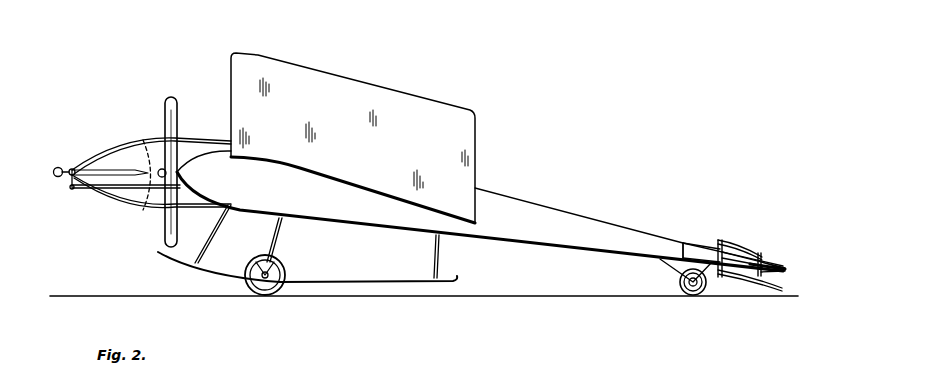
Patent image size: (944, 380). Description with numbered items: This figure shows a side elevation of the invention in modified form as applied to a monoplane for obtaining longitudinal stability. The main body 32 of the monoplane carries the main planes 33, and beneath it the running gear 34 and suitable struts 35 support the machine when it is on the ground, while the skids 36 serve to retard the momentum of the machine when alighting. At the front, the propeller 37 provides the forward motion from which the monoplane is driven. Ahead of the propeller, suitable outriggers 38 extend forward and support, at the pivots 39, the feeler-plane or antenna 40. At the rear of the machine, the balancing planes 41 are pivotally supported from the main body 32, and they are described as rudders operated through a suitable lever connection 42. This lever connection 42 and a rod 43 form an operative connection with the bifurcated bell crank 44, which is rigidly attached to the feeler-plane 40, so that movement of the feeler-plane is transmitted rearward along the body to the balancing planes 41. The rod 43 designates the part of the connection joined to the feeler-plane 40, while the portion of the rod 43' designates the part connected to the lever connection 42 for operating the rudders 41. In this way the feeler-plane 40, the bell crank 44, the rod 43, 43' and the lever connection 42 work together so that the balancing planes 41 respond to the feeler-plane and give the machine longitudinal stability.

The main body 32 is at (480, 211).
The main planes 33 is at (422, 110).
The running gear 34 is at (286, 272).
The struts 35 is at (217, 233).
The skids 36 is at (307, 267).
The propeller 37 is at (178, 107).
The outriggers 38 is at (115, 150).
The pivots 39 is at (59, 167).
The feeler-plane 40 is at (108, 178).
The balancing planes 41 is at (737, 244).
The lever connection 42 is at (755, 252).
The rod 43 is at (143, 196).
The portion of the rod 43' is at (704, 236).
The bifurcated bell crank 44 is at (66, 180).